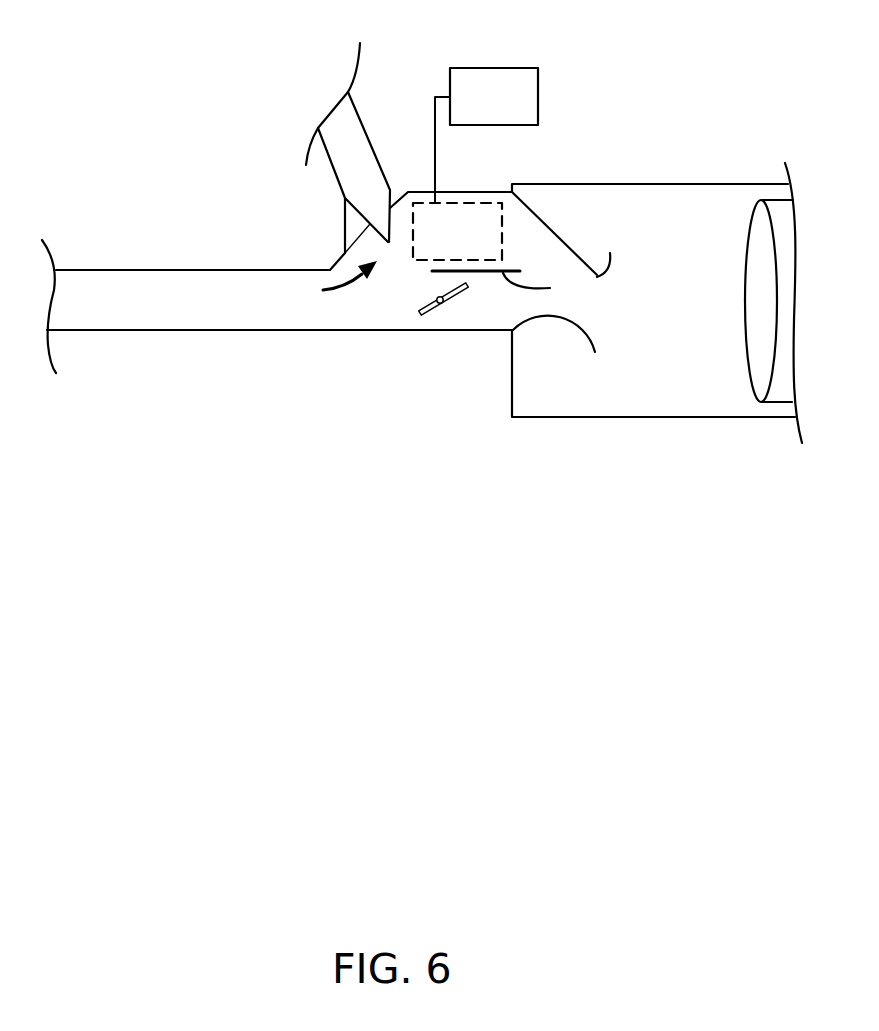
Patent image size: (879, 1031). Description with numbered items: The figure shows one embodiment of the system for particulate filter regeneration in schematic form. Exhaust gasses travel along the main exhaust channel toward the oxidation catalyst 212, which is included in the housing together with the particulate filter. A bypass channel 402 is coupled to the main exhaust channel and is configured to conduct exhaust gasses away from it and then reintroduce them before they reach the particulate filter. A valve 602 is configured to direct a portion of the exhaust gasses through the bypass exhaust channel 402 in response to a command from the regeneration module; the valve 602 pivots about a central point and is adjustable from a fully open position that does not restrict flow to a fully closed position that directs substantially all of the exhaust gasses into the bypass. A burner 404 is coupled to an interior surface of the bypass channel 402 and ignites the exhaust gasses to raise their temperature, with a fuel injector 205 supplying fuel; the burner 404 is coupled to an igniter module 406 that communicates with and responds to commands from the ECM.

The fuel injector 205 is at (333, 167).
The bypass channel 402 is at (329, 281).
The burner 404 is at (466, 237).
The igniter module 406 is at (486, 135).
The valve 602 is at (428, 316).
The oxidation catalyst 212 is at (760, 302).